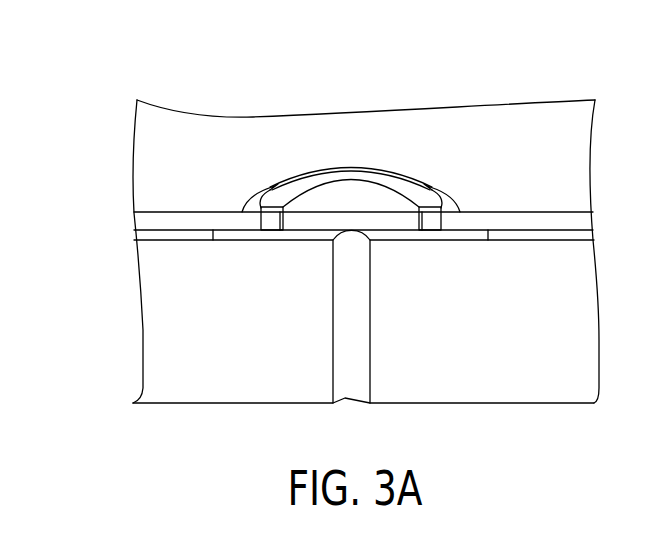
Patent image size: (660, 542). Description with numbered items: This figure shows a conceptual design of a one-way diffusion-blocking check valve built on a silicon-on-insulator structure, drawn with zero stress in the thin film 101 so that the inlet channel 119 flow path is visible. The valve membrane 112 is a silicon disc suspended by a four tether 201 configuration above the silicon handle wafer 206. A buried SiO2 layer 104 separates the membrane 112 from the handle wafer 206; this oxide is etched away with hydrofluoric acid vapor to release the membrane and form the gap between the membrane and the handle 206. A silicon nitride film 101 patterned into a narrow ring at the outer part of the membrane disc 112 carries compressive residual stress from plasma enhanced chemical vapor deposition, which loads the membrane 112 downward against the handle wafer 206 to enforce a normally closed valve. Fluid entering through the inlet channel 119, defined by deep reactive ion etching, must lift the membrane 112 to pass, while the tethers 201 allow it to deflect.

The thin film 101 is at (343, 172).
The membrane 112 is at (302, 205).
The tether 201 is at (423, 182).
The buried SiO2 layer 104 is at (137, 236).
The silicon handle wafer 206 is at (148, 330).
The inlet channel 119 is at (345, 398).